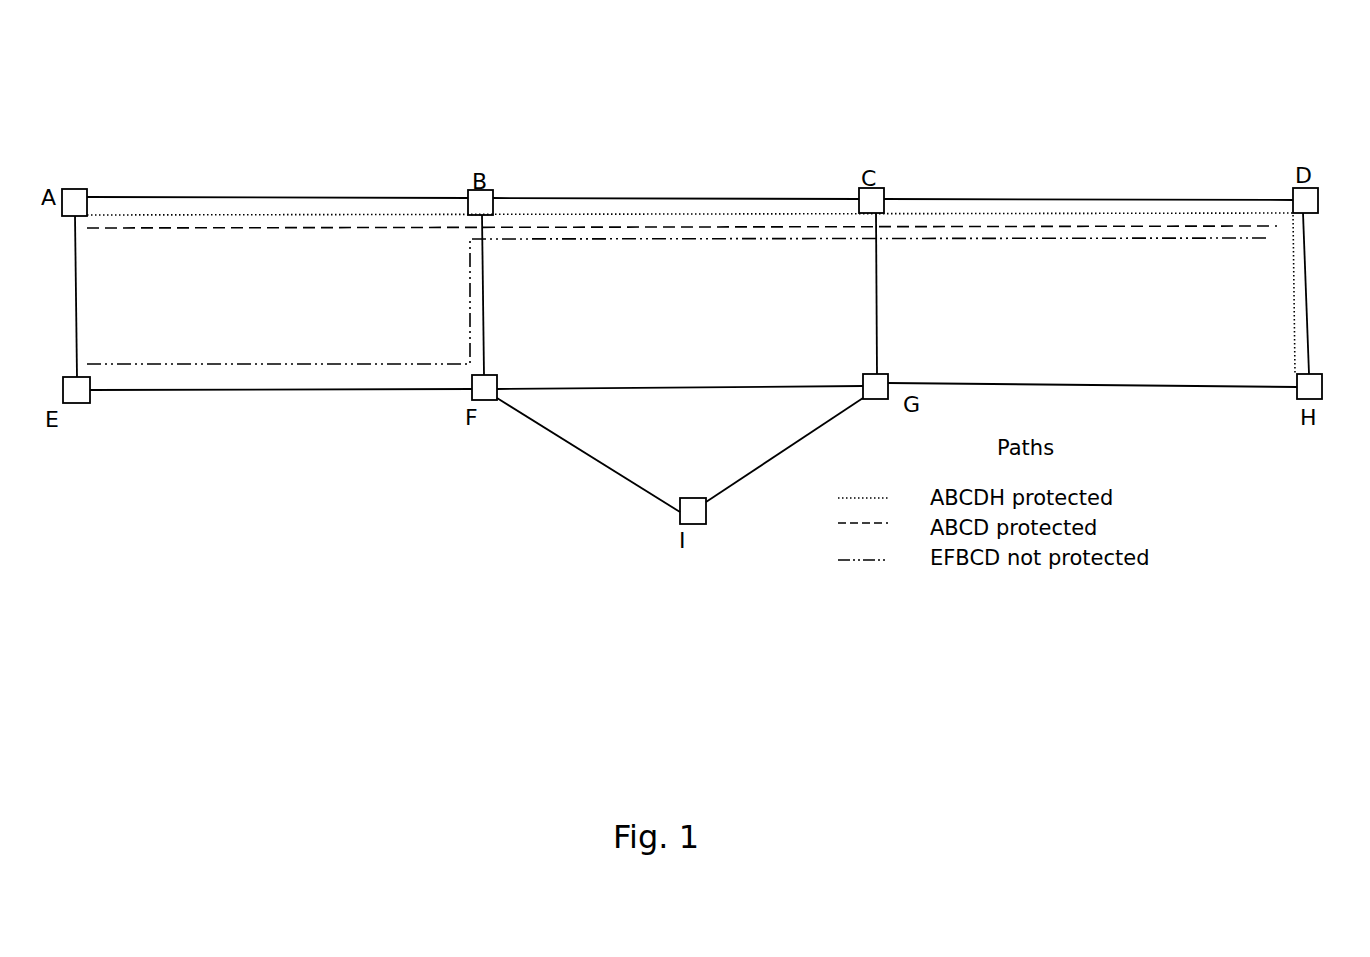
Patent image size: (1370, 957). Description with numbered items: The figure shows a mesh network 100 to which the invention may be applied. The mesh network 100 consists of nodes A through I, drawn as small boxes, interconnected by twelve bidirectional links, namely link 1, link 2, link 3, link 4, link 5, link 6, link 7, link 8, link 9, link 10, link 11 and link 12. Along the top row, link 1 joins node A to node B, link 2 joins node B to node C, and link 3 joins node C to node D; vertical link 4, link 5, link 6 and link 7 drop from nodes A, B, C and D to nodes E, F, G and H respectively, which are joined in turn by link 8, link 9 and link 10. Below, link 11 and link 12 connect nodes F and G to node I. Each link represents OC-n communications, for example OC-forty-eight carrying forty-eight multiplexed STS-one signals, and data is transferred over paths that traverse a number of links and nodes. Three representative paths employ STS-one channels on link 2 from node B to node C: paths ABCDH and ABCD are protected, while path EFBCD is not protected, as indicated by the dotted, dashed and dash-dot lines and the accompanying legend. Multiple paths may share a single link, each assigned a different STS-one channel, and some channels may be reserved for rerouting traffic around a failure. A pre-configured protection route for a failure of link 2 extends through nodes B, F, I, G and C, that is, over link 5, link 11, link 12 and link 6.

The mesh network 100 is at (1228, 76).
The link 1 is at (332, 197).
The link 2 is at (698, 198).
The link 3 is at (1118, 198).
The link 4 is at (78, 310).
The link 5 is at (484, 297).
The link 6 is at (877, 284).
The link 7 is at (1298, 282).
The link 8 is at (260, 388).
The link 9 is at (678, 387).
The link 10 is at (1108, 385).
The link 11 is at (619, 472).
The link 12 is at (752, 470).